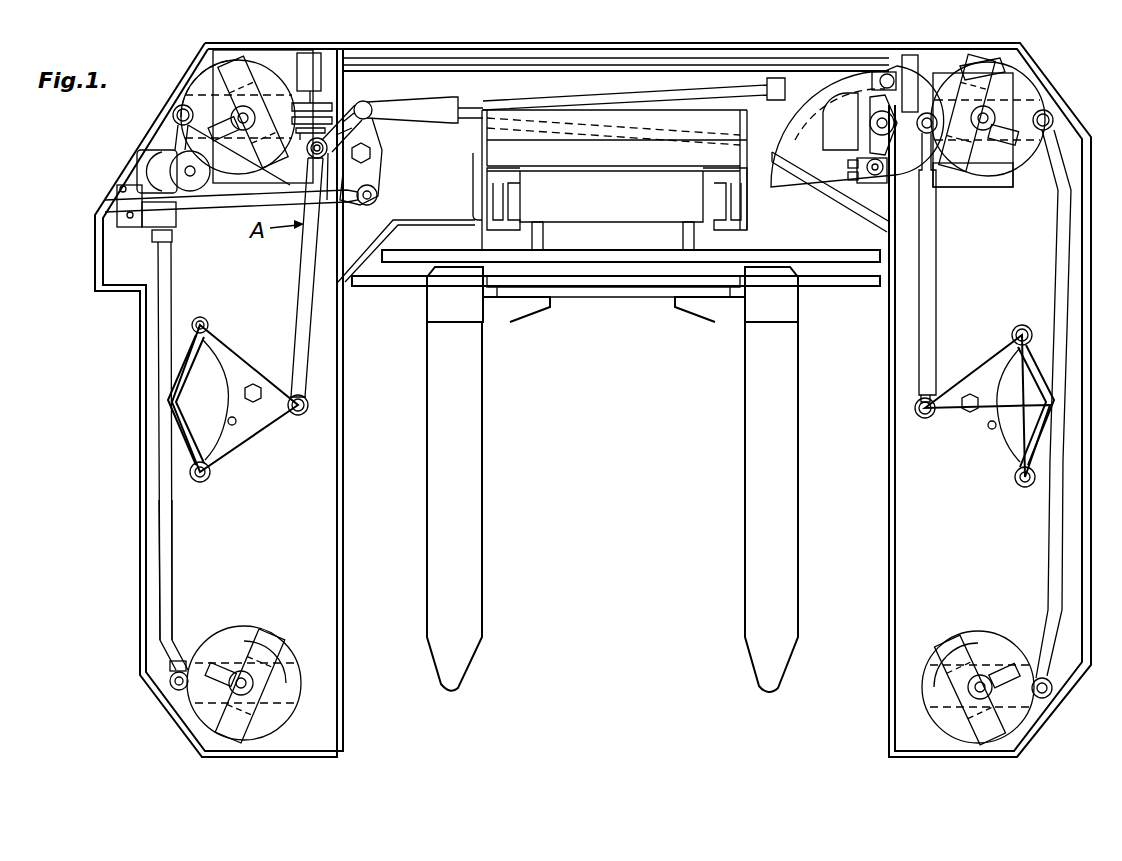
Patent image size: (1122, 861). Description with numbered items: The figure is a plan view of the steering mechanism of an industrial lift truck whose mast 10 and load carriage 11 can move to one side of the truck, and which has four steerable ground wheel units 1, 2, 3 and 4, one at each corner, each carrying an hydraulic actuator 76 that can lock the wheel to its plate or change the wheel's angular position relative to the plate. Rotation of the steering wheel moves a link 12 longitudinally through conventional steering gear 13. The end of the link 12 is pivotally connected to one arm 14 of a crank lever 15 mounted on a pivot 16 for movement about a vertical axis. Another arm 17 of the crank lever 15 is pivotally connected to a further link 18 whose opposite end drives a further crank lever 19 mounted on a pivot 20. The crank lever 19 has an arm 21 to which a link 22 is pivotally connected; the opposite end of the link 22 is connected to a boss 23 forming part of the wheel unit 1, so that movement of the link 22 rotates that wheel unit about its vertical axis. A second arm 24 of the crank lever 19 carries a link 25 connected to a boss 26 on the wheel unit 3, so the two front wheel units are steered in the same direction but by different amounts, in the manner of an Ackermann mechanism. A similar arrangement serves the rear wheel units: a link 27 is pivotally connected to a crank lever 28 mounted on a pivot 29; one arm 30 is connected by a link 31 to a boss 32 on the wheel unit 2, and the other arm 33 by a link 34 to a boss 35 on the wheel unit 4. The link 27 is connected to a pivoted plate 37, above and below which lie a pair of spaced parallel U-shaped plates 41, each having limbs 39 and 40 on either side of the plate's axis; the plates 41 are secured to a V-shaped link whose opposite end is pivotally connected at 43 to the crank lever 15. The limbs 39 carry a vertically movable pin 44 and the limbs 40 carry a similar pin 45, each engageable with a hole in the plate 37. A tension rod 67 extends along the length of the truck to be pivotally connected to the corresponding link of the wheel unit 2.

The steerable ground wheel unit 1 is at (305, 83).
The steerable ground wheel unit 2 is at (1047, 100).
The steerable ground wheel unit 3 is at (303, 722).
The steerable ground wheel unit 4 is at (1035, 721).
The mast 10 is at (743, 207).
The load carriage 11 is at (600, 283).
The link 12 is at (242, 212).
The steering gear 13 is at (197, 185).
The arm 14 is at (370, 175).
The crank lever 15 is at (378, 135).
The pivot 16 is at (372, 154).
The arm 17 is at (326, 140).
The link 18 is at (310, 327).
The crank lever 19 is at (272, 435).
The pivot 20 is at (255, 388).
The arm 21 is at (227, 450).
The link 22 is at (170, 283).
The boss 23 is at (172, 112).
The arm 24 is at (223, 352).
The link 25 is at (170, 507).
The boss 26 is at (183, 670).
The link 27 is at (935, 247).
The crank lever 28 is at (960, 465).
The pivot 29 is at (965, 410).
The arm 30 is at (1003, 465).
The link 31 is at (1052, 293).
The boss 32 is at (1030, 140).
The arm 33 is at (980, 368).
The link 34 is at (1050, 547).
The boss 35 is at (1038, 678).
The plate 37 is at (900, 145).
The limbs 39 is at (782, 168).
The limbs 40 is at (820, 170).
The U-shaped plates 41 is at (587, 95).
The pivotal connection 43 is at (372, 107).
The pin 44 is at (975, 66).
The pin 45 is at (865, 178).
The tension rod 67 is at (465, 62).
The hydraulic actuator 76 is at (235, 80).